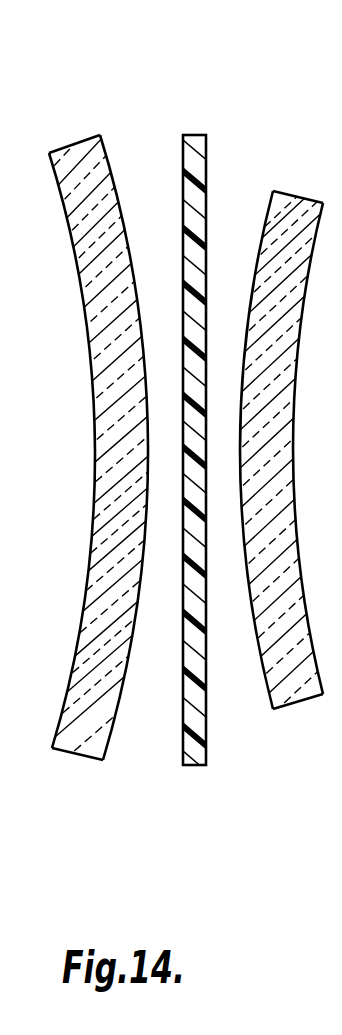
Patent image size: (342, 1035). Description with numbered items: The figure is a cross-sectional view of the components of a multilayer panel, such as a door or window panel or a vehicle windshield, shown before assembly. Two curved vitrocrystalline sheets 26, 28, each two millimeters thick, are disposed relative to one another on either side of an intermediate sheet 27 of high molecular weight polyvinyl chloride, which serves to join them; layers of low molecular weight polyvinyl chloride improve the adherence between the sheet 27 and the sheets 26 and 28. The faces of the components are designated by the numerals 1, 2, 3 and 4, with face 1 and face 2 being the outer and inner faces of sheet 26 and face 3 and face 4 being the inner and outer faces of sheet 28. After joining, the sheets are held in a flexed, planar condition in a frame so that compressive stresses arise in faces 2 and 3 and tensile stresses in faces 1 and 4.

The face 1 is at (65, 217).
The face 2 is at (120, 192).
The face 3 is at (262, 237).
The face 4 is at (313, 245).
The vitrocrystalline sheet 26 is at (104, 453).
The sheet of high molecular weight polyvinyl chloride 27 is at (208, 453).
The vitrocrystalline sheet 28 is at (282, 452).